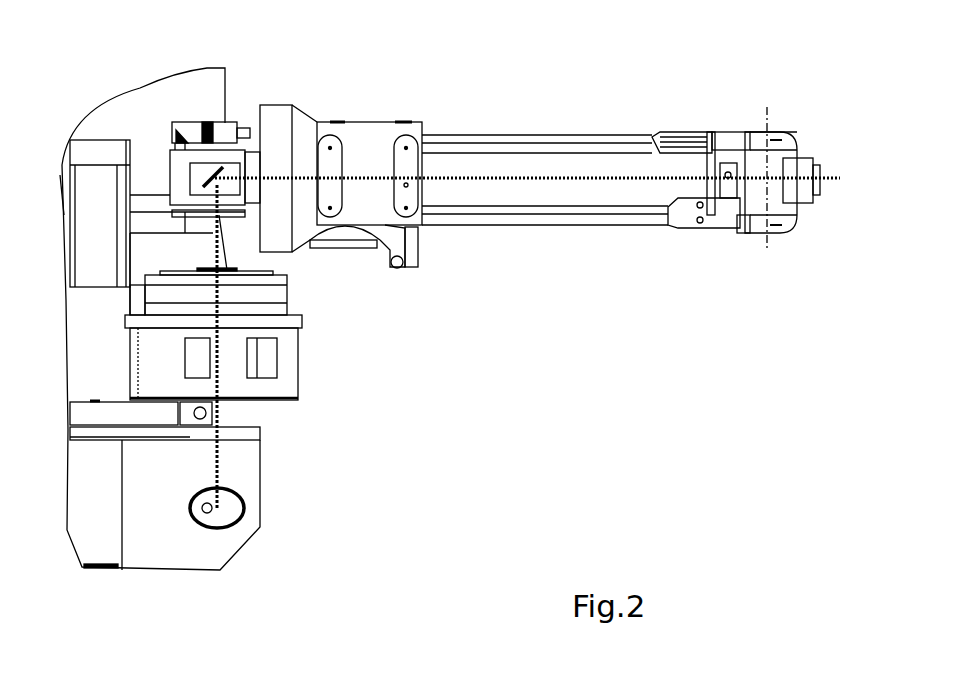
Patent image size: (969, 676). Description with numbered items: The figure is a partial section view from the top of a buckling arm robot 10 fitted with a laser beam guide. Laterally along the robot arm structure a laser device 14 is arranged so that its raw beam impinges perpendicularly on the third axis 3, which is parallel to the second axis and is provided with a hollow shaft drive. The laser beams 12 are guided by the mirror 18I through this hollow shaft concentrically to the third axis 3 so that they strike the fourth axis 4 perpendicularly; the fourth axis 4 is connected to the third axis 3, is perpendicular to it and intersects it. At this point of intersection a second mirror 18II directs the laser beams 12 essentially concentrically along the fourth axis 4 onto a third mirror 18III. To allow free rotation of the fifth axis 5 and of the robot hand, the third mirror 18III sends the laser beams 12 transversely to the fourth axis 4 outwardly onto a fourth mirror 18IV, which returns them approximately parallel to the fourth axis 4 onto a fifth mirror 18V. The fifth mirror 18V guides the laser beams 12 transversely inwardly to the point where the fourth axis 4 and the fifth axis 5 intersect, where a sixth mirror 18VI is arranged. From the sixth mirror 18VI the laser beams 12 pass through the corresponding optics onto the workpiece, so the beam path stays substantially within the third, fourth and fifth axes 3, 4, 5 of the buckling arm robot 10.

The buckling arm robot 10 is at (372, 88).
The laser beams 12 is at (437, 177).
The third axis 3 is at (222, 347).
The fourth axis 4 is at (498, 186).
The fifth axis 5 is at (772, 250).
The laser device 14 is at (220, 548).
The mirror 18I is at (244, 507).
The second mirror 18II is at (208, 170).
The third mirror 18III is at (715, 180).
The fourth mirror 18IV is at (708, 132).
The fifth mirror 18V is at (765, 133).
The sixth mirror 18VI is at (766, 236).